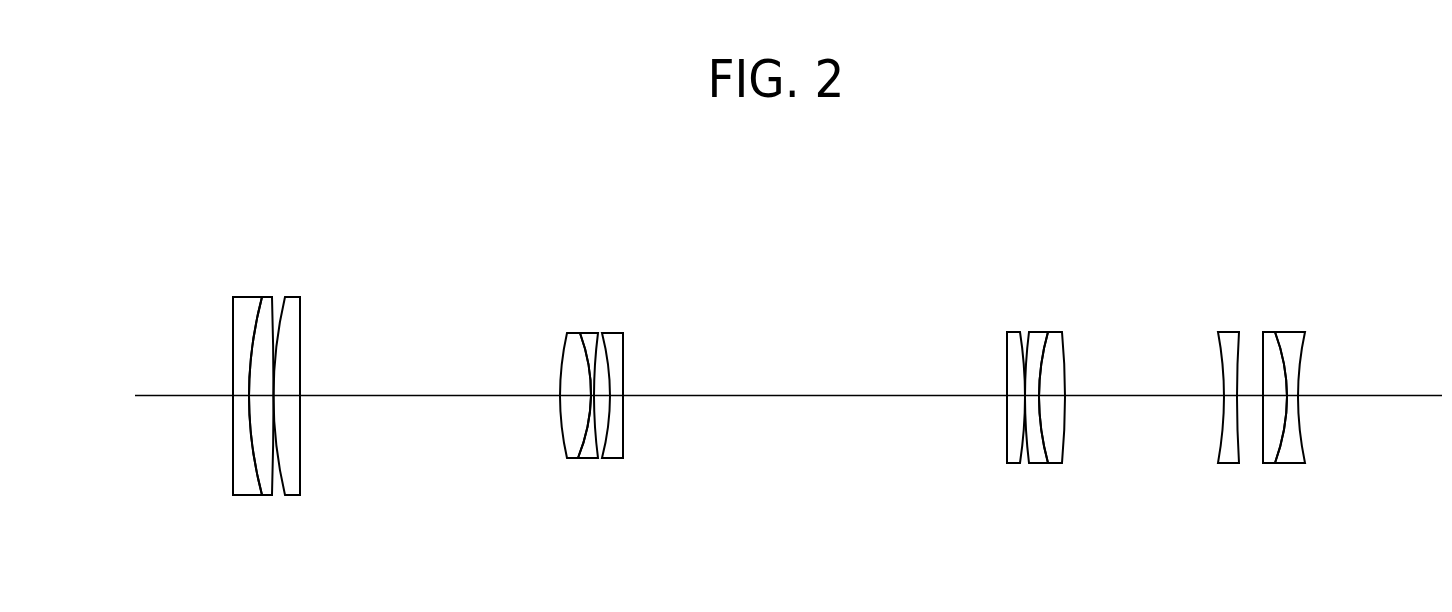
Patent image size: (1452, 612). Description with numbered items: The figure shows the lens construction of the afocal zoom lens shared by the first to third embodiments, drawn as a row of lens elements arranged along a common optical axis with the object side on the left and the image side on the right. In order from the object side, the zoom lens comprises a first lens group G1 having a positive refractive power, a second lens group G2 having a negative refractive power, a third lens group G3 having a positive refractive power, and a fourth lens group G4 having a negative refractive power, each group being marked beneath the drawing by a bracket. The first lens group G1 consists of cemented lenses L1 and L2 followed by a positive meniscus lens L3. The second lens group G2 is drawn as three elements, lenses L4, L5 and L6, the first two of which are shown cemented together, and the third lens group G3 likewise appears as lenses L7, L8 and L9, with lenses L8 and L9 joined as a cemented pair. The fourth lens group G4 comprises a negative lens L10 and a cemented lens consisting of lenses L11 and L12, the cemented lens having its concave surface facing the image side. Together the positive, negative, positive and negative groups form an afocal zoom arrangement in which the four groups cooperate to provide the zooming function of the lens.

The lens L1 is at (245, 296).
The lens L2 is at (262, 296).
The third lens L3 is at (290, 296).
The fourth lens L4 is at (572, 332).
The fifth lens L5 is at (587, 332).
The sixth lens L6 is at (612, 332).
The seventh lens L7 is at (1013, 331).
The eighth lens L8 is at (1037, 331).
The ninth lens L9 is at (1055, 331).
The negative lens L10 is at (1225, 331).
The lens L11 is at (1267, 331).
The lens L12 is at (1287, 331).
The first lens group G1 is at (271, 386).
The second lens group G2 is at (598, 395).
The third lens group G3 is at (1041, 395).
The fourth lens group G4 is at (1276, 395).